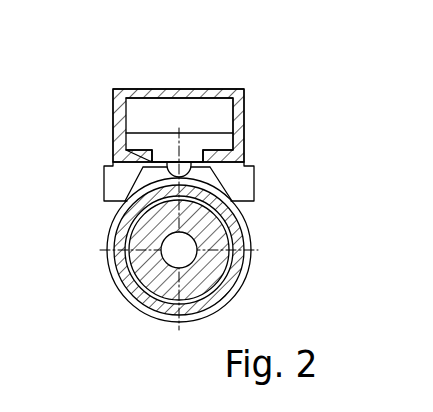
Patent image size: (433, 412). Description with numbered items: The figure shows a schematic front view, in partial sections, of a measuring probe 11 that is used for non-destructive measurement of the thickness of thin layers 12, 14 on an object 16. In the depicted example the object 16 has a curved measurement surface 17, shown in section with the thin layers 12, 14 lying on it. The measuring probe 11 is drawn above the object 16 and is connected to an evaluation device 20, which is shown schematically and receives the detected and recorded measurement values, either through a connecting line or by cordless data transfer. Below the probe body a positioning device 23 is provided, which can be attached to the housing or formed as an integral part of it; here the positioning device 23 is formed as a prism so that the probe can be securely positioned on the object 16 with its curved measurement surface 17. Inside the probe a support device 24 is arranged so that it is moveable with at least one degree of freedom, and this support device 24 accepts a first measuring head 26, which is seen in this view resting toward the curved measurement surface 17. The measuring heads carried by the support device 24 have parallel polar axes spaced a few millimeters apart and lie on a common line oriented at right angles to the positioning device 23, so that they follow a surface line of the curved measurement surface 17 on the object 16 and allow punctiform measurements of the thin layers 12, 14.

The measuring probe 11 is at (270, 84).
The evaluation device 20 is at (176, 92).
The support device 24 is at (163, 151).
The first measuring head 26 is at (163, 164).
The positioning device 23 is at (272, 182).
The curved measurement surface 17 is at (110, 233).
The thin layer 14 is at (155, 317).
The thin layer 12 is at (138, 290).
The object 16 is at (138, 262).